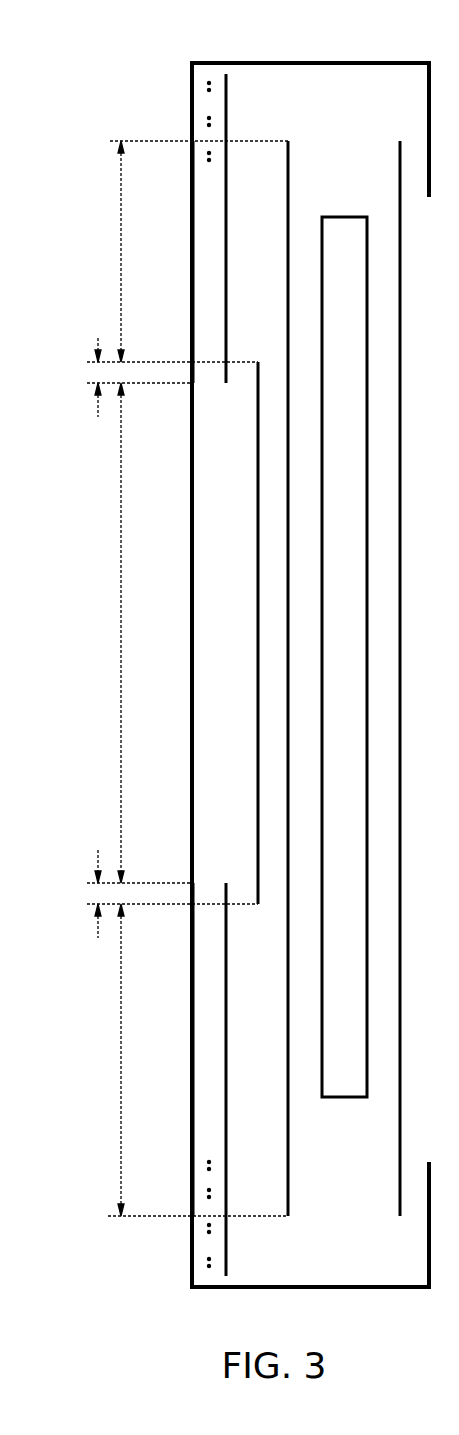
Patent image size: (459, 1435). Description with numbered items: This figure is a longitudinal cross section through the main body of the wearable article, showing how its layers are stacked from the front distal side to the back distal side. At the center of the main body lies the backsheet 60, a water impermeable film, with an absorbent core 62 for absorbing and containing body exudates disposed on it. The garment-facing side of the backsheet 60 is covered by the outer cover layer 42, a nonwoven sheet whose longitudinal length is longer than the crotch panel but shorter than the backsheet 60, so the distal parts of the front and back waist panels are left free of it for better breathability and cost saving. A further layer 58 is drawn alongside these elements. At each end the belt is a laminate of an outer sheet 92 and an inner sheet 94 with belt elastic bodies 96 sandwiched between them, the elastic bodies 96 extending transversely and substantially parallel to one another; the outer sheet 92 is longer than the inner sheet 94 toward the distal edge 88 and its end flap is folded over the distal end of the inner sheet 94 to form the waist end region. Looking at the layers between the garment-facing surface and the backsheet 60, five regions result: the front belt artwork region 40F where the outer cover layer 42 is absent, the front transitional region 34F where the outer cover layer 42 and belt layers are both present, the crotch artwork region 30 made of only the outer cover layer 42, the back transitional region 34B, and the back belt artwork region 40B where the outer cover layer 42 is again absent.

The crotch artwork region 30 is at (121, 676).
The front transitional region 34F is at (98, 340).
The back transitional region 34B is at (98, 930).
The front belt artwork region 40F is at (121, 255).
The back belt artwork region 40B is at (121, 1060).
The outer cover layer 42 is at (258, 733).
The outer wall 58 is at (400, 676).
The backsheet 60 is at (288, 530).
The absorbent core 62 is at (345, 216).
The distal edge 88 is at (336, 62).
The outer sheet 92 is at (193, 245).
The inner sheet 94 is at (226, 112).
The belt elastic bodies 96 is at (208, 81).